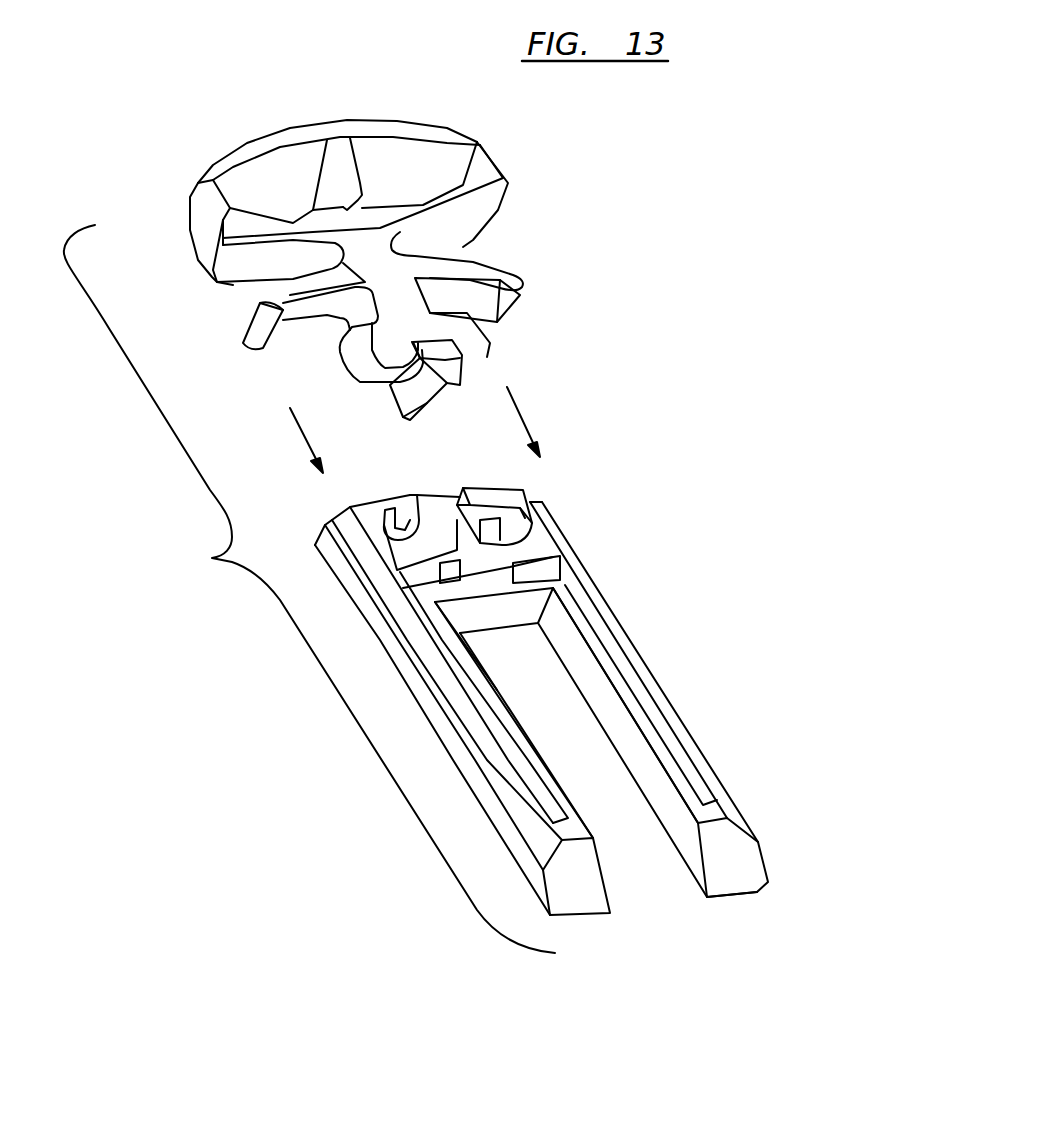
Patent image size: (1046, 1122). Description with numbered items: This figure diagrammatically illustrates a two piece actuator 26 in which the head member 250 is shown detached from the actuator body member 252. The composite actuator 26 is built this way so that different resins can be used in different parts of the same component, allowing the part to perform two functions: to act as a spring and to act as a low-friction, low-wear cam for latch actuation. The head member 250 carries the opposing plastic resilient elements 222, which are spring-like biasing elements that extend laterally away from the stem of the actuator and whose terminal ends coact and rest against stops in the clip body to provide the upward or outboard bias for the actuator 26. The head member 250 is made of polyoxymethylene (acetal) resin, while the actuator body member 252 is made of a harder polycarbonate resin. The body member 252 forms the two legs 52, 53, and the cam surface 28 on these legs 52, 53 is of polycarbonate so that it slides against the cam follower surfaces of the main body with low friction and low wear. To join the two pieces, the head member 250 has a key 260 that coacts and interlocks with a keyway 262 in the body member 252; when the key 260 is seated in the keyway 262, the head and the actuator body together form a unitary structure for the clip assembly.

The actuator 26 is at (215, 558).
The head member 250 is at (325, 125).
The resilient elements 222 is at (522, 286).
The key 260 is at (440, 422).
The keyway 262 is at (453, 537).
The actuator body member 252 is at (603, 597).
The leg 52 is at (667, 690).
The leg 53 is at (455, 765).
The cam surface 28 is at (767, 863).